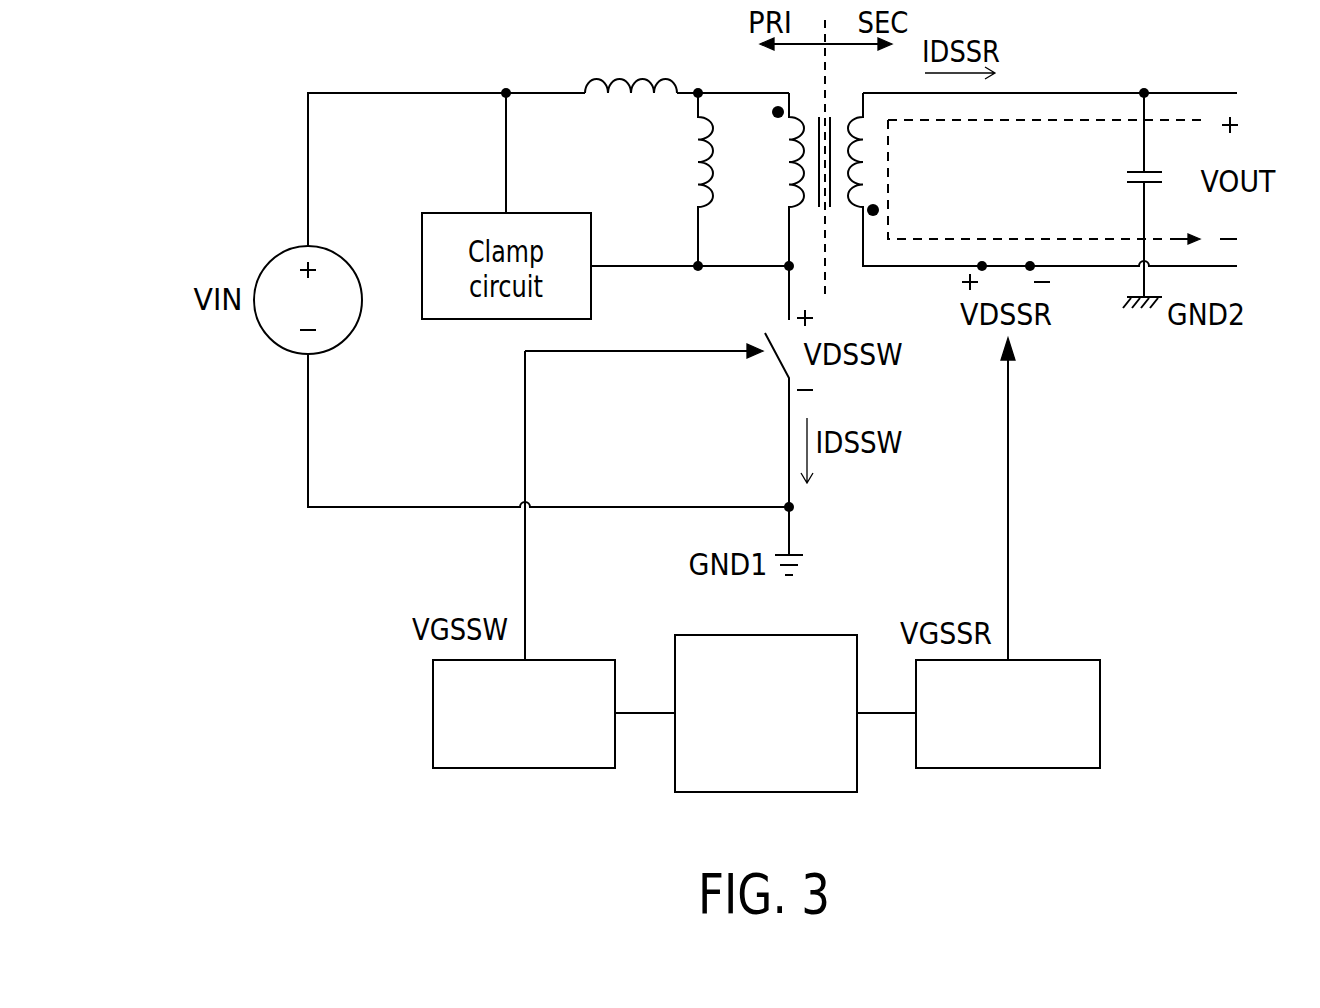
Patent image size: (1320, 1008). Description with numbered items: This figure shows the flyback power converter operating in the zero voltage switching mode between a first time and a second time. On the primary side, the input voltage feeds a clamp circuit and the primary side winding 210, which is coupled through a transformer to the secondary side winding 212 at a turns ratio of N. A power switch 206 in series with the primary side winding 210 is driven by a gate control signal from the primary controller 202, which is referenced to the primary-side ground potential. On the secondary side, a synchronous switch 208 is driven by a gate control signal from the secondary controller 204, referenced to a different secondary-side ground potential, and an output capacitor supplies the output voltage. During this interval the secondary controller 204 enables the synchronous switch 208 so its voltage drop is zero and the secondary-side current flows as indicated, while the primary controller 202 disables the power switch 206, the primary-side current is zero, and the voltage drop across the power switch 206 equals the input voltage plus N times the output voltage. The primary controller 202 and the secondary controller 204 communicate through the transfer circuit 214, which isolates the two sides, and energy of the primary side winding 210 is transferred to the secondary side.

The primary controller 202 is at (525, 770).
The secondary controller 204 is at (1008, 771).
The power switch 206 is at (779, 358).
The synchronous switch 208 is at (1011, 263).
The primary side winding 210 is at (791, 157).
The secondary side winding 212 is at (860, 157).
The transfer circuit 214 is at (766, 795).